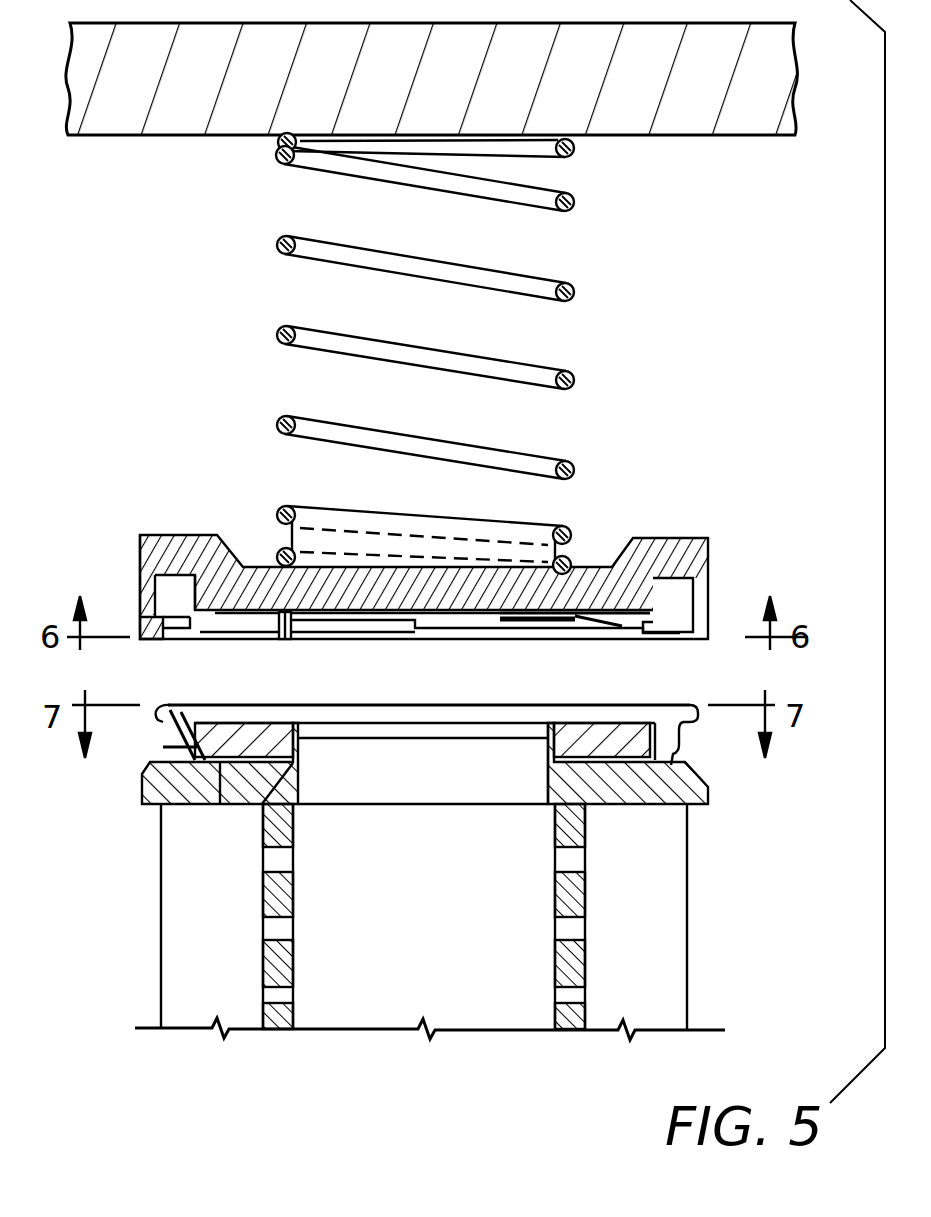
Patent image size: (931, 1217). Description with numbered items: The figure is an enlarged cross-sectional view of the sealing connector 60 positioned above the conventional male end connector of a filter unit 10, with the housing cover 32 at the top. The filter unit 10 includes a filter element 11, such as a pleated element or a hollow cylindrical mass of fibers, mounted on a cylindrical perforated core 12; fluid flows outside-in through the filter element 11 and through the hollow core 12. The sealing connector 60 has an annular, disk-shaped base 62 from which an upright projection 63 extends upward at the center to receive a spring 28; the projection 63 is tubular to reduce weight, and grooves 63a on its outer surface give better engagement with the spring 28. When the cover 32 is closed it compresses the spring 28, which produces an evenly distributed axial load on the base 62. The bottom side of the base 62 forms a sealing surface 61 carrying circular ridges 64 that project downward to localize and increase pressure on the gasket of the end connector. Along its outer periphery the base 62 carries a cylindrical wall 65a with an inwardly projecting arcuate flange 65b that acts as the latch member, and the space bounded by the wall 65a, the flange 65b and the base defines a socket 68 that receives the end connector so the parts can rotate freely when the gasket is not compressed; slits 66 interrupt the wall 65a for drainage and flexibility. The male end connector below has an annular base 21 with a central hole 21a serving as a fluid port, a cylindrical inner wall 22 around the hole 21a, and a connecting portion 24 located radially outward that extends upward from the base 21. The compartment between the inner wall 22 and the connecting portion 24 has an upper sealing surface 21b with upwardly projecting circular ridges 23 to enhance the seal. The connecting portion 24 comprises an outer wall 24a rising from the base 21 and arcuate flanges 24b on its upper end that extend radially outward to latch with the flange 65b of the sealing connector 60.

The filter unit 10 is at (465, 922).
The filter element 11 is at (673, 895).
The cylindrical perforated core 12 is at (585, 915).
The base 21 is at (483, 802).
The hole 21a is at (455, 796).
The sealing surface 21b is at (548, 758).
The cylindrical inner wall 22 is at (300, 752).
The circular ridges 23 is at (262, 806).
The connecting portion 24 is at (364, 791).
The outer wall 24a is at (165, 752).
The arcuate flanges 24b is at (160, 722).
The spring 28 is at (278, 246).
The cover 32 is at (731, 137).
The sealing connector 60 is at (383, 566).
The sealing surface 61 is at (505, 625).
The base 62 is at (418, 605).
The upright projection 63 is at (308, 540).
The grooves 63a is at (573, 562).
The circular ridges 64 is at (623, 614).
The cylindrical wall 65a is at (140, 602).
The flange 65b is at (174, 639).
The slits 66 is at (282, 640).
The socket 68 is at (170, 590).